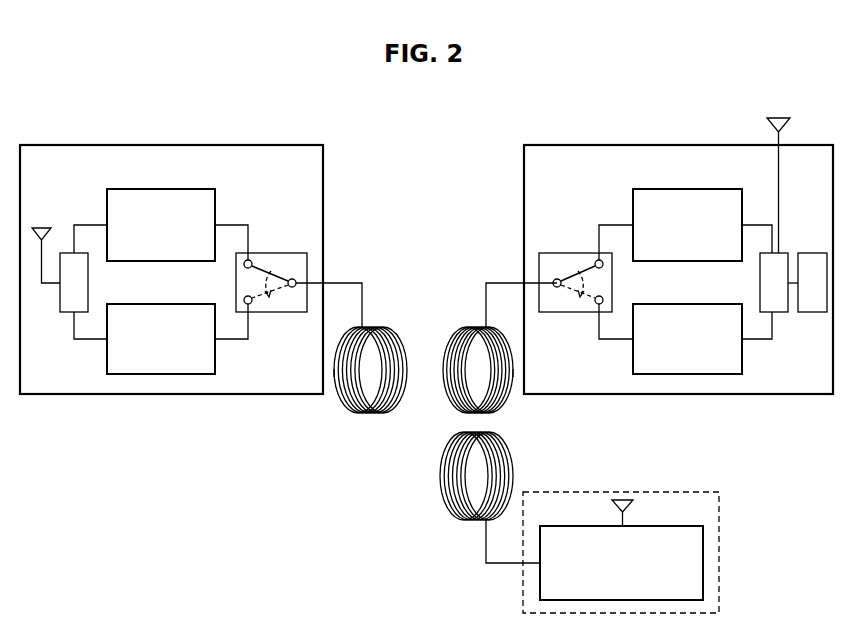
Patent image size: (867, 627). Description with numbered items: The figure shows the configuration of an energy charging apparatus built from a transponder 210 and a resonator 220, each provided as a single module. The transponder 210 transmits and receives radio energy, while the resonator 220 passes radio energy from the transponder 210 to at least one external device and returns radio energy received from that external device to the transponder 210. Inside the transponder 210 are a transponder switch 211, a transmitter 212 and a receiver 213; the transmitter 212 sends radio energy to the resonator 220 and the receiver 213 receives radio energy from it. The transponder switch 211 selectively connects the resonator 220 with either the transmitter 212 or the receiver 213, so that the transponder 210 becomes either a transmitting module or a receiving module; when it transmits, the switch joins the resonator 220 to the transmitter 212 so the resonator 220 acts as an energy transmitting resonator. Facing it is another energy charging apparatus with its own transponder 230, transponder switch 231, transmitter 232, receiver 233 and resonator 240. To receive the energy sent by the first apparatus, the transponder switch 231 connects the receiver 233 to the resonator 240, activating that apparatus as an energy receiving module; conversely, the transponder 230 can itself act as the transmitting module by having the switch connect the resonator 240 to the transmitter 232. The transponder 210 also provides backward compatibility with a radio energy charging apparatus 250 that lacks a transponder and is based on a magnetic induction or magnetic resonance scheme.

The transponder 210 is at (162, 145).
The transponder switch 211 is at (273, 252).
The transmitter 212 is at (154, 189).
The receiver 213 is at (154, 304).
The resonator 220 is at (375, 327).
The transponder 230 is at (677, 144).
The transponder switch 231 is at (573, 252).
The transmitter 232 is at (680, 189).
The receiver 233 is at (680, 304).
The resonator 240 is at (448, 393).
The radio energy charging apparatus 250 is at (619, 492).